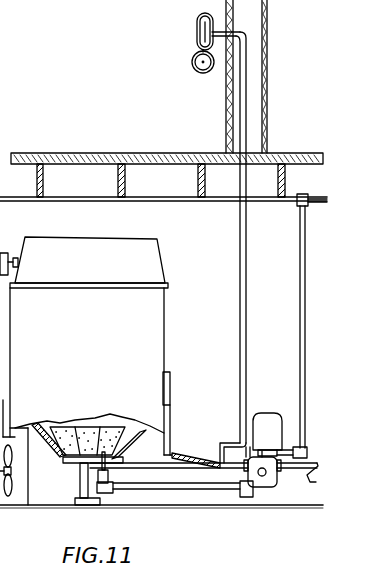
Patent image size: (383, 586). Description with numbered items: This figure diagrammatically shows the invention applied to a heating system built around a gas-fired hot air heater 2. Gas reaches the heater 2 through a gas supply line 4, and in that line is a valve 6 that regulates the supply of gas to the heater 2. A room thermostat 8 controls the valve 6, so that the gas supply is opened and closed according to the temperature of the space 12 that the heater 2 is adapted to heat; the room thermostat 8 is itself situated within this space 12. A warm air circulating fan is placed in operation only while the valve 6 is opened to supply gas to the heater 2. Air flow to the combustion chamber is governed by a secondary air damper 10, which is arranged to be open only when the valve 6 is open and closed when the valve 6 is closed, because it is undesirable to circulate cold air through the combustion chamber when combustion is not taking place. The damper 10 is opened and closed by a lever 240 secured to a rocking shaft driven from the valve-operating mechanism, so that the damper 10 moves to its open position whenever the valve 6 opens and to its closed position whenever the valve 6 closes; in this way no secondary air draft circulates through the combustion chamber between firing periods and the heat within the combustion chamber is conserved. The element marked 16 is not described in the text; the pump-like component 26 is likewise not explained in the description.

The gas-fired hot air heater 2 is at (168, 331).
The gas supply line 4 is at (314, 478).
The valve 6 is at (276, 483).
The room thermostat 8 is at (197, 30).
The secondary air damper 10 is at (200, 455).
The space 12 is at (163, 254).
The wall 16 is at (5, 107).
The pump 26 is at (277, 412).
The lever 240 is at (228, 427).